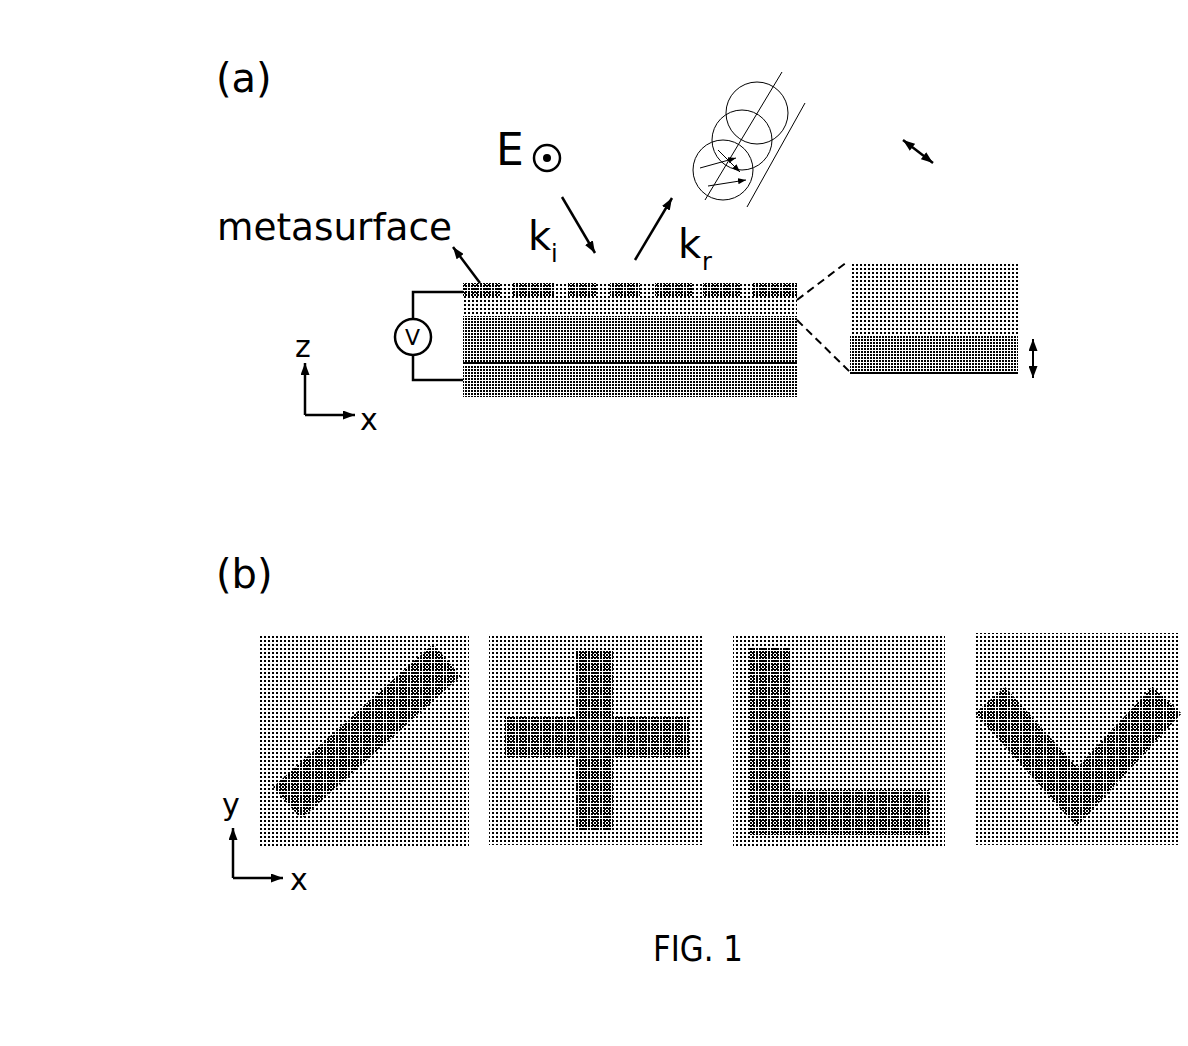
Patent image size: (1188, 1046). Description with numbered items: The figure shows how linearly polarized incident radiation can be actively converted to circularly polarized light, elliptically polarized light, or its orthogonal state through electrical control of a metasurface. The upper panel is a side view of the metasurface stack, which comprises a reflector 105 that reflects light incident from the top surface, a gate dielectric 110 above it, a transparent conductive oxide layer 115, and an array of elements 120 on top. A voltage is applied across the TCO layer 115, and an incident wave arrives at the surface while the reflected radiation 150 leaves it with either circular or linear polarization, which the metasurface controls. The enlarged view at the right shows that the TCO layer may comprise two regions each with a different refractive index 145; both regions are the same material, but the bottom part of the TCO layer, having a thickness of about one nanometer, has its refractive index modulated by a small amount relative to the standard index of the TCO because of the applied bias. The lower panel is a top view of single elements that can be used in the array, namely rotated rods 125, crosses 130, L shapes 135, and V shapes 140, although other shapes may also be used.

The reflector 105 is at (583, 387).
The gate dielectric 110 is at (482, 352).
The transparent conductive oxide layer 115 is at (470, 305).
The array of elements 120 is at (737, 280).
The rotated rod 125 is at (364, 699).
The cross 130 is at (595, 697).
The L shape 135 is at (839, 690).
The V shape 140 is at (1078, 685).
The layer with two regions of different refractive index 145 is at (1033, 297).
The reflected radiation 150 is at (813, 90).